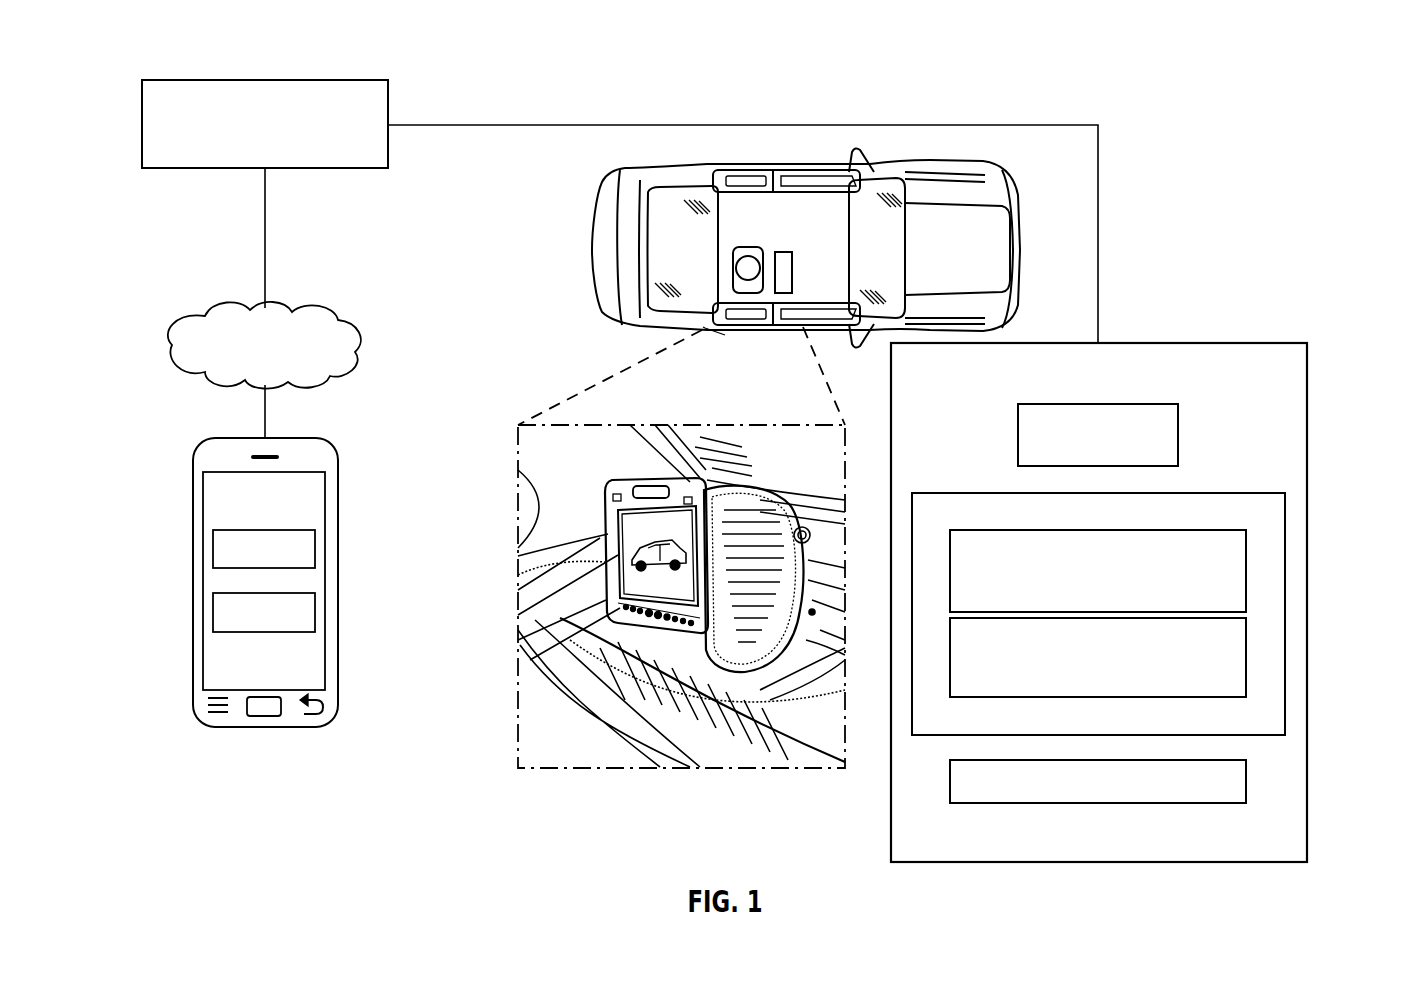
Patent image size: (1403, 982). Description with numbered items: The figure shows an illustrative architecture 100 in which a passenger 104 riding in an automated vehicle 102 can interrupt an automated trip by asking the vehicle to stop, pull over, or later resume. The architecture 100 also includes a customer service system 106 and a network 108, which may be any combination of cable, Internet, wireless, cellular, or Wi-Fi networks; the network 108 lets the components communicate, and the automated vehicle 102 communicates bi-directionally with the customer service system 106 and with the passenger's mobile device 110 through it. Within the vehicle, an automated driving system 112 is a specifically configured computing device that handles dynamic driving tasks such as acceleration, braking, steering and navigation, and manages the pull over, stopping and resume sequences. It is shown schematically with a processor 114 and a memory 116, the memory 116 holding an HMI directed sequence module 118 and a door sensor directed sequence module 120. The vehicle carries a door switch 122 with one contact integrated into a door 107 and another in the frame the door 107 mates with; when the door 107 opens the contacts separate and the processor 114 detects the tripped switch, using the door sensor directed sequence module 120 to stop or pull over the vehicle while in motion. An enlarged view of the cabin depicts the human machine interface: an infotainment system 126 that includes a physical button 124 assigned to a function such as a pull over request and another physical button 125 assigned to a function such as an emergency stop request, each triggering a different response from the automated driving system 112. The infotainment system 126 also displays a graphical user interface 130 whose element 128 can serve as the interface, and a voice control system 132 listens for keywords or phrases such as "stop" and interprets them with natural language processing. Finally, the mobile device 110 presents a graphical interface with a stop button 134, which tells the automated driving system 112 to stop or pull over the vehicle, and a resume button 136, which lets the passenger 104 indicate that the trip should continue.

The illustrative architecture 100 is at (319, 41).
The automated vehicle 102 is at (605, 237).
The passenger 104 is at (703, 328).
The customer service system 106 is at (208, 80).
The door 107 is at (743, 327).
The network 108 is at (210, 315).
The mobile device 110 is at (245, 514).
The automated driving system 112 is at (1243, 343).
The processor 114 is at (1180, 435).
The memory 116 is at (1222, 493).
The HMI directed sequence module 118 is at (1183, 530).
The door sensor directed sequence module 120 is at (1248, 658).
The door switch 122 is at (723, 327).
The physical button 124 is at (690, 624).
The physical button 125 is at (635, 618).
The infotainment system 126 is at (710, 514).
The element of graphical user interface 128 is at (633, 523).
The graphical user interface 130 is at (633, 549).
The voice control system 132 is at (1248, 782).
The stop button 134 is at (213, 549).
The resume button 136 is at (213, 611).